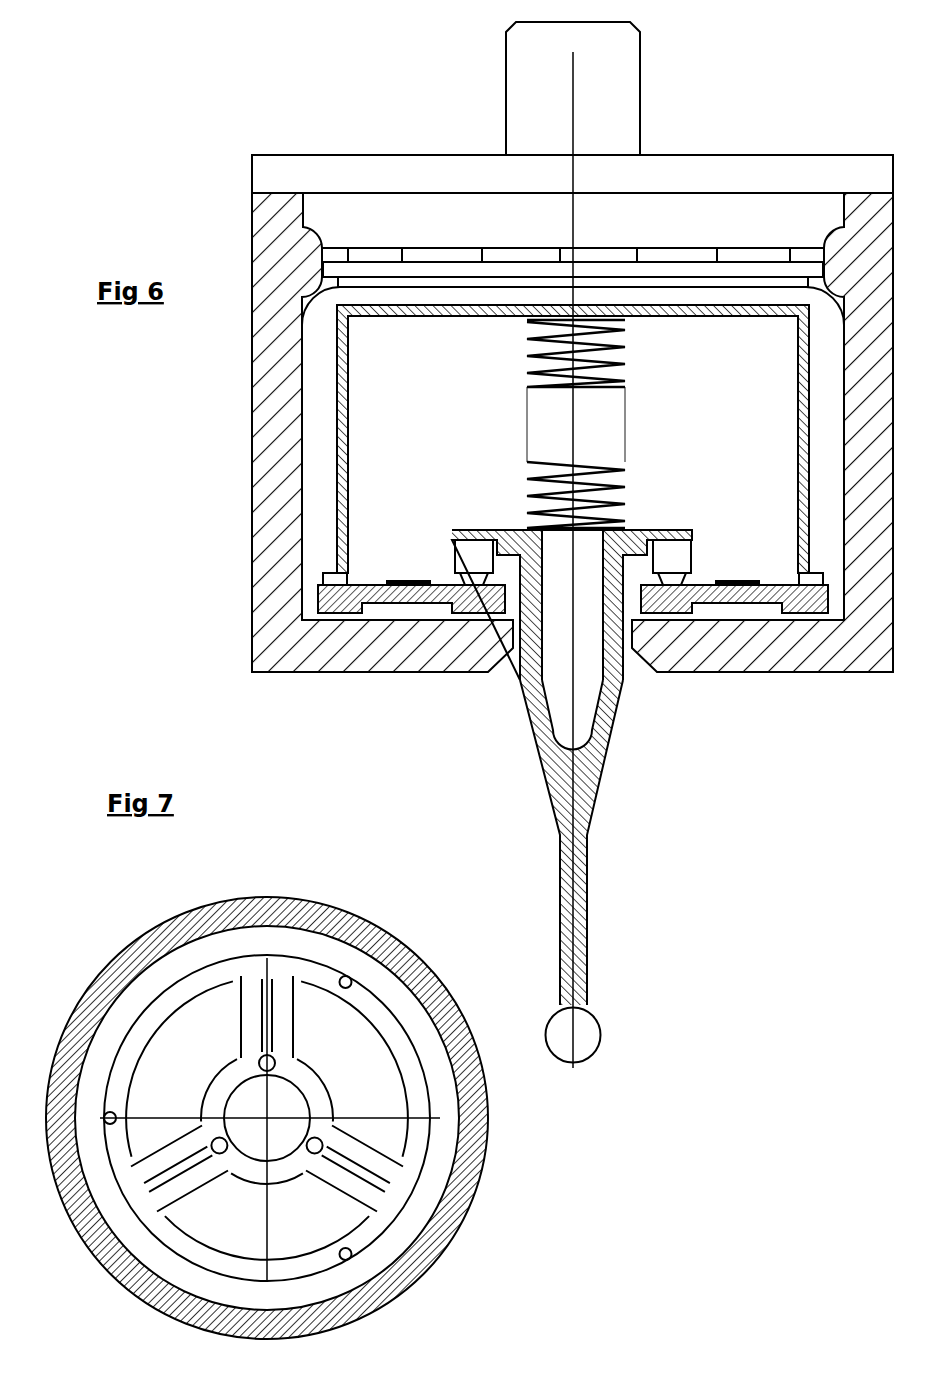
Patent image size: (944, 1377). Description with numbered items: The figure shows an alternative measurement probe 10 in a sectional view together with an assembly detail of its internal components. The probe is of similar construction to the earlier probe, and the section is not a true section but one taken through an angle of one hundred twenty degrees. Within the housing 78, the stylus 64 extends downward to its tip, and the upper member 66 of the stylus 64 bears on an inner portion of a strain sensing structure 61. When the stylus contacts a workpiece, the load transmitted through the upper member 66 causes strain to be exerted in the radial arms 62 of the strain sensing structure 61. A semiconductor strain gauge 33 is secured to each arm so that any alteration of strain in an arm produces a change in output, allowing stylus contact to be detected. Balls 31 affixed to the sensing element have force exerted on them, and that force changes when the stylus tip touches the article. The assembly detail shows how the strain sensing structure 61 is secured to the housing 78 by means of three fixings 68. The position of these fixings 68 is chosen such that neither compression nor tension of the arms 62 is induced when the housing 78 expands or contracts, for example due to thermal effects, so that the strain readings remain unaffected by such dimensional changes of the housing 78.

In FIG. 6, the measurement probe 10 is at (200, 180).
In FIG. 6, the housing 78 is at (252, 411).
In FIG. 7, the housing 78 is at (147, 927).
In FIG. 6, the upper member 66 is at (482, 528).
In FIG. 6, the stylus 64 is at (578, 843).
In FIG. 6, the strain sensing structure 61 is at (700, 582).
In FIG. 7, the strain sensing structure 61 is at (300, 963).
In FIG. 6, the radial arms 62 is at (381, 583).
In FIG. 7, the radial arms 62 is at (248, 1018).
In FIG. 6, the semiconductor strain gauge 33 is at (418, 581).
In FIG. 7, the balls 31 is at (262, 1080).
In FIG. 7, the fixings 68 is at (340, 990).